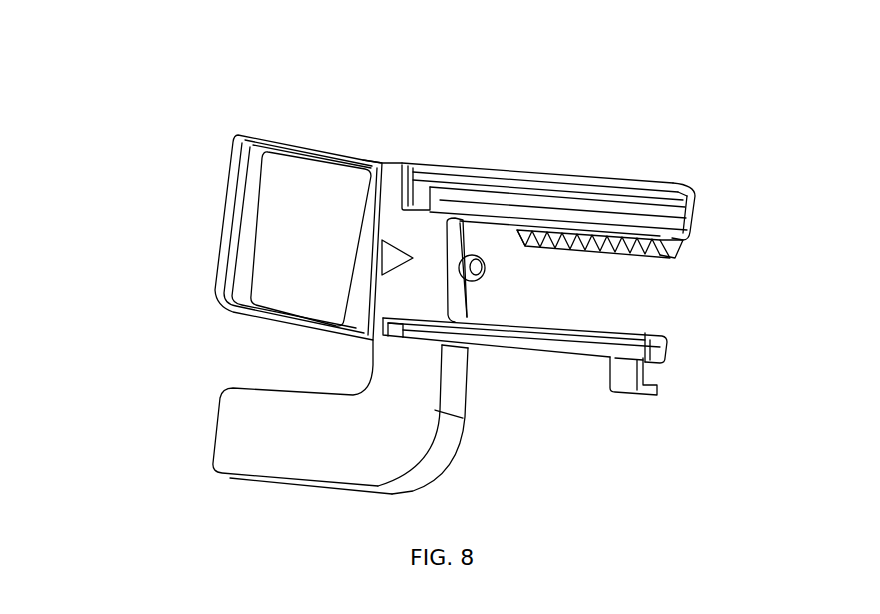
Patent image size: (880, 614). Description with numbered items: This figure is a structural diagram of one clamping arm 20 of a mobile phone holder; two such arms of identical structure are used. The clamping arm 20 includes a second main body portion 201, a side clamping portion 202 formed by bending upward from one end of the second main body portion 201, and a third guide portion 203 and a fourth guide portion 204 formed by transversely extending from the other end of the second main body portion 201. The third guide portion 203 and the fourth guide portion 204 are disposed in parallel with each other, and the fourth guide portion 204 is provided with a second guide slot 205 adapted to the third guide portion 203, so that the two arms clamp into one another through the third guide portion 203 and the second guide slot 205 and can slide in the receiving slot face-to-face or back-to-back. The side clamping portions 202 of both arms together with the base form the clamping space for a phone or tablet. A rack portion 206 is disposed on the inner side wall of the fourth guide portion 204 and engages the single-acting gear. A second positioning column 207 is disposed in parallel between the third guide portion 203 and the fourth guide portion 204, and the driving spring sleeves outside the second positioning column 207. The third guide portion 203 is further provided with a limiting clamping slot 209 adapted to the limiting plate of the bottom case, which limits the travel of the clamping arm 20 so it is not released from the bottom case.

The clamping arm 20 is at (362, 147).
The second main body portion 201 is at (408, 268).
The side clamping portion 202 is at (230, 240).
The third guide portion 203 is at (663, 333).
The fourth guide portion 204 is at (693, 220).
The second guide slot 205 is at (600, 203).
The rack portion 206 is at (680, 252).
The second positioning column 207 is at (467, 272).
The limiting clamping slot 209 is at (653, 380).